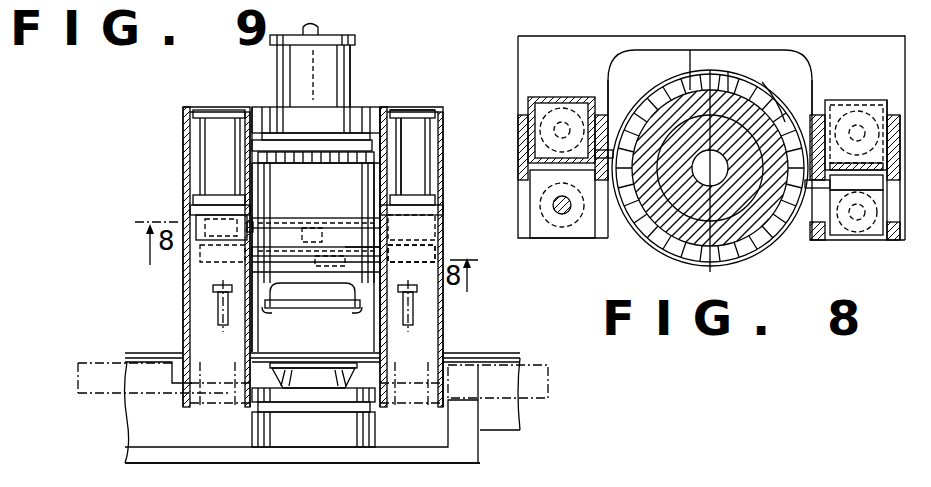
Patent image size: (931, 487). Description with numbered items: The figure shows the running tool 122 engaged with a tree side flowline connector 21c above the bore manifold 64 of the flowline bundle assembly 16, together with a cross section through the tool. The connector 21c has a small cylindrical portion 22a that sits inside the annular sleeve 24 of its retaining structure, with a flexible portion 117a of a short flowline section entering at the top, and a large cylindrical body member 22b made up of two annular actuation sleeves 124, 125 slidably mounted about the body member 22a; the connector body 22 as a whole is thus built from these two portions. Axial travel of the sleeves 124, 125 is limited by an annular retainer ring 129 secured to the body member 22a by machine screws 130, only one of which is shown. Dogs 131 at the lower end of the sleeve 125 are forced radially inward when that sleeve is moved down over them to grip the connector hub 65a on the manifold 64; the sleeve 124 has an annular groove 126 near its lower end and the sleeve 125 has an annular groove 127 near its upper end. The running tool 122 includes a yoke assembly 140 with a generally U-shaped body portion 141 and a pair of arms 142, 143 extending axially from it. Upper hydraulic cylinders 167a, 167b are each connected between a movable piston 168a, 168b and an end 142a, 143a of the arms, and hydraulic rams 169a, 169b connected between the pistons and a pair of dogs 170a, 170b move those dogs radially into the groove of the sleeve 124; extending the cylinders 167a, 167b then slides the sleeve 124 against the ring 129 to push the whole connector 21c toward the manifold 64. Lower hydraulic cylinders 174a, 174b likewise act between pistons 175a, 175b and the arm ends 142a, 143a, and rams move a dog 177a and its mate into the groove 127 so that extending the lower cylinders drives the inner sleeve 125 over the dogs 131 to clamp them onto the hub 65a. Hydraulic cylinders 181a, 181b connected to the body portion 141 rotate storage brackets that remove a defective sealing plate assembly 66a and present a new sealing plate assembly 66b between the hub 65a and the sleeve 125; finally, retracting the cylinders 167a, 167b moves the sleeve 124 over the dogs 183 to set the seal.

In FIG. 9, the flowline bundle assembly 16 is at (118, 410).
In FIG. 9, the tree side flowline connector 21c is at (397, 162).
In FIG. 8, the tree side flowline connector 21c is at (728, 70).
In FIG. 9, the shaft 22 is at (268, 62).
In FIG. 9, the small cylindrical portion 22a is at (352, 62).
In FIG. 8, the small cylindrical portion 22a is at (678, 208).
In FIG. 9, the large cylindrical body member 22b is at (242, 176).
In FIG. 8, the large cylindrical body member 22b is at (772, 254).
In FIG. 9, the annular sleeve 24 is at (275, 108).
In FIG. 9, the bore manifold 64 is at (412, 455).
In FIG. 9, the connector hub 65a is at (318, 370).
In FIG. 9, the defective sealing plate assembly 66a is at (548, 391).
In FIG. 9, the new sealing plate assembly 66b is at (78, 378).
In FIG. 9, the portion of short flowline section 117a is at (320, 28).
In FIG. 9, the running tool 122 is at (178, 128).
In FIG. 8, the running tool 122 is at (517, 37).
In FIG. 9, the actuation sleeve 124 is at (372, 190).
In FIG. 8, the actuation sleeve 124 is at (660, 72).
In FIG. 9, the actuation sleeve 125 is at (258, 262).
In FIG. 8, the actuation sleeve 125 is at (728, 266).
In FIG. 9, the annular groove 126 is at (383, 215).
In FIG. 8, the annular groove 126 is at (690, 72).
In FIG. 9, the annular groove 127 is at (265, 272).
In FIG. 8, the annular groove 127 is at (762, 82).
In FIG. 9, the annular retainer ring 129 is at (326, 196).
In FIG. 9, the machine screw 130 is at (318, 240).
In FIG. 9, the dogs 131 is at (352, 318).
In FIG. 9, the yoke assembly 140 is at (176, 110).
In FIG. 8, the yoke assembly 140 is at (517, 48).
In FIG. 9, the body portion 141 is at (445, 308).
In FIG. 9, the arm 142 is at (447, 402).
In FIG. 8, the arm 142 is at (905, 225).
In FIG. 9, the arm end 142a is at (405, 110).
In FIG. 9, the arm 143 is at (185, 192).
In FIG. 8, the arm 143 is at (517, 238).
In FIG. 9, the arm end 143a is at (216, 105).
In FIG. 9, the upper hydraulic cylinder 167a is at (435, 127).
In FIG. 8, the upper hydraulic cylinder 167a is at (840, 105).
In FIG. 8, the upper hydraulic cylinder 167b is at (586, 103).
In FIG. 9, the piston 168a is at (438, 248).
In FIG. 8, the piston 168a is at (880, 100).
In FIG. 9, the piston 168b is at (196, 225).
In FIG. 8, the piston 168b is at (538, 97).
In FIG. 9, the hydraulic ram 169a is at (437, 222).
In FIG. 9, the hydraulic ram 169b is at (400, 185).
In FIG. 9, the dog 170a is at (372, 220).
In FIG. 8, the dog 170a is at (802, 115).
In FIG. 8, the dog 170b is at (620, 140).
In FIG. 8, the lower hydraulic cylinder 174a is at (845, 235).
In FIG. 9, the lower hydraulic cylinder 174b is at (205, 148).
In FIG. 8, the lower hydraulic cylinder 174b is at (580, 238).
In FIG. 9, the piston 175a is at (428, 297).
In FIG. 9, the piston 175b is at (213, 300).
In FIG. 8, the dog 177a is at (798, 218).
In FIG. 9, the hydraulic cylinder 181a is at (455, 332).
In FIG. 9, the hydraulic cylinder 181b is at (200, 352).
In FIG. 9, the dogs 183 is at (330, 163).